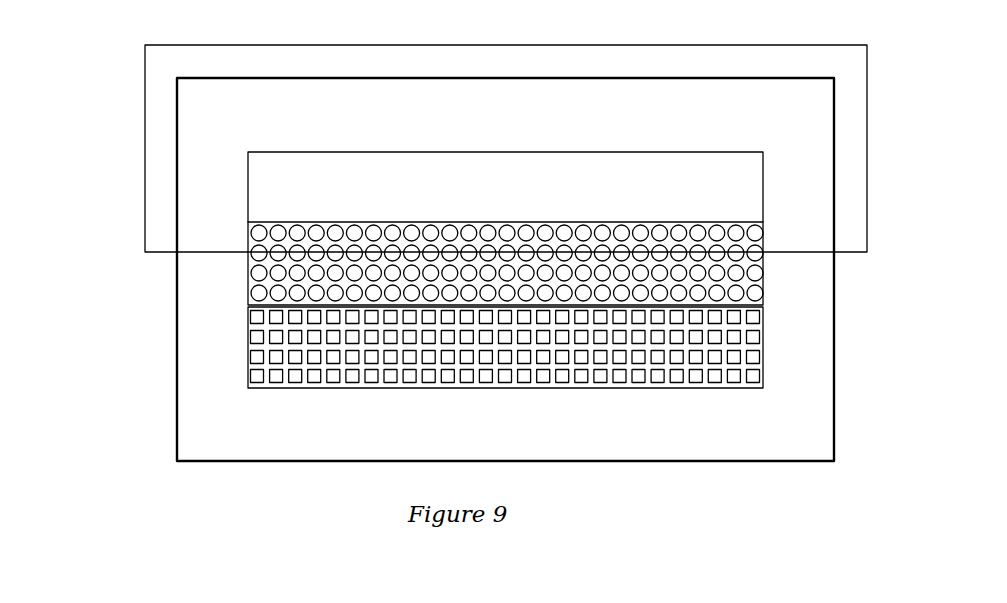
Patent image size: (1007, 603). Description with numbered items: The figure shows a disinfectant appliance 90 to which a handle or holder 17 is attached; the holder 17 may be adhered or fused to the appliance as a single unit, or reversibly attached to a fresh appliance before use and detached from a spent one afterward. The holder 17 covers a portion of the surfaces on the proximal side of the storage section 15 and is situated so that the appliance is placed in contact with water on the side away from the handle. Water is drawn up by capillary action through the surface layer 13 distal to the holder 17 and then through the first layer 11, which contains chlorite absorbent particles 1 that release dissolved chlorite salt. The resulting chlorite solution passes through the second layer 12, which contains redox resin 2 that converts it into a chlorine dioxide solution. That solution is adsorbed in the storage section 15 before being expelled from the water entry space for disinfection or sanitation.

The appliance 90 is at (119, 106).
The handle or holder 17 is at (155, 163).
The surface layer 13 is at (208, 424).
The storage section 15 is at (247, 198).
The second layer 12 is at (430, 272).
The redox resin 2 is at (247, 293).
The first layer 11 is at (435, 356).
The chlorite absorbent particles 1 is at (247, 378).